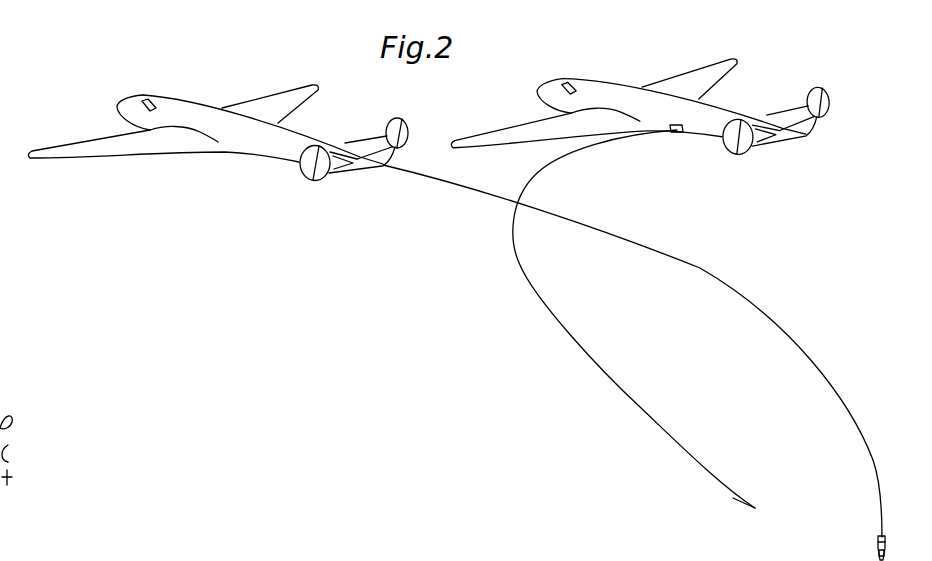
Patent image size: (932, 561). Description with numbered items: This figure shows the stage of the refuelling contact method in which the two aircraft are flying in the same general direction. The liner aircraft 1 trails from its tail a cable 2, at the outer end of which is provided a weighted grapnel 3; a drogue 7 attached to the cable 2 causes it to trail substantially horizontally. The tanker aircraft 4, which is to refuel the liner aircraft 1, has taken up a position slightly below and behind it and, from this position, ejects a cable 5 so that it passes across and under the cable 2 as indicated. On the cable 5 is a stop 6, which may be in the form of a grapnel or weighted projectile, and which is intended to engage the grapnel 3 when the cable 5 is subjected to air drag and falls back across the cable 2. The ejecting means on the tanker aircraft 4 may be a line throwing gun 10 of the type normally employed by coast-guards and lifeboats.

The liner aircraft 1 is at (252, 150).
The cable 2 is at (623, 236).
The weighted grapnel 3 is at (900, 529).
The tanker aircraft 4 is at (722, 113).
The cable 5 is at (538, 176).
The stop 6 is at (733, 498).
The drogue 7 is at (887, 553).
The line throwing gun 10 is at (682, 116).